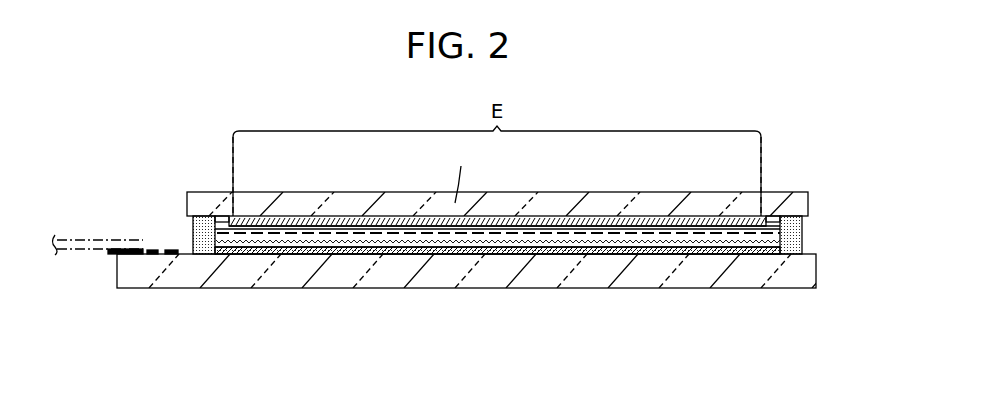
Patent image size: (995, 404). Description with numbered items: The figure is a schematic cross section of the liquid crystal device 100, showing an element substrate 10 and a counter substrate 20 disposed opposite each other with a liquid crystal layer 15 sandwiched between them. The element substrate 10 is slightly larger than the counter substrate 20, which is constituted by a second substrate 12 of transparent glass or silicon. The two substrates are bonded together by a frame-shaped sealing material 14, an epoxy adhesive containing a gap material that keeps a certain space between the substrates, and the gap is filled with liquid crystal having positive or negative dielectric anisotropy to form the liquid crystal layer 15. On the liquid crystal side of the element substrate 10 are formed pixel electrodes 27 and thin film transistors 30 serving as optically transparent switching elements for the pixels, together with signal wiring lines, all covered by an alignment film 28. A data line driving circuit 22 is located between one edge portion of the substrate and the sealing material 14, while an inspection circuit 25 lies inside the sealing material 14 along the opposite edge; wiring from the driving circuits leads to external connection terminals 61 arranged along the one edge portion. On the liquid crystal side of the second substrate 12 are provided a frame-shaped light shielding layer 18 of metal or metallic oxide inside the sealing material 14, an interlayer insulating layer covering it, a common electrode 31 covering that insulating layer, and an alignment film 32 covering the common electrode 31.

The liquid crystal device 100 is at (662, 112).
The element substrate 10 is at (490, 304).
The second substrate 12 is at (455, 203).
The sealing material 14 is at (201, 255).
The liquid crystal layer 15 is at (522, 245).
The light shielding layer 18 is at (222, 216).
The counter substrate 20 is at (525, 180).
The data line driving circuit 22 is at (176, 250).
The inspection circuit 25 is at (770, 256).
The pixel electrodes 27 is at (333, 257).
The alignment film 28 is at (757, 257).
The thin film transistors 30 is at (348, 257).
The common electrode 31 is at (373, 227).
The alignment film 32 is at (300, 221).
The external connection terminals 61 is at (138, 257).